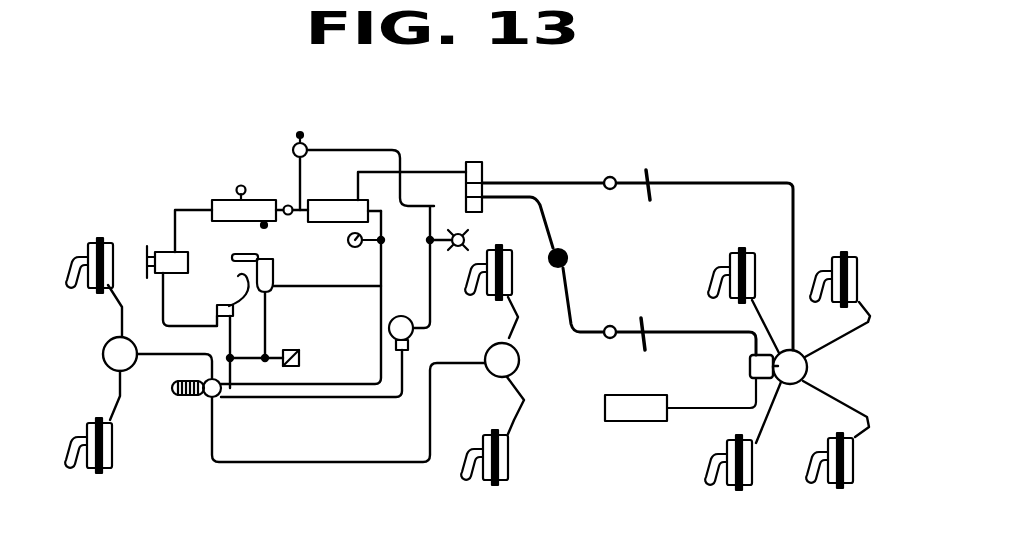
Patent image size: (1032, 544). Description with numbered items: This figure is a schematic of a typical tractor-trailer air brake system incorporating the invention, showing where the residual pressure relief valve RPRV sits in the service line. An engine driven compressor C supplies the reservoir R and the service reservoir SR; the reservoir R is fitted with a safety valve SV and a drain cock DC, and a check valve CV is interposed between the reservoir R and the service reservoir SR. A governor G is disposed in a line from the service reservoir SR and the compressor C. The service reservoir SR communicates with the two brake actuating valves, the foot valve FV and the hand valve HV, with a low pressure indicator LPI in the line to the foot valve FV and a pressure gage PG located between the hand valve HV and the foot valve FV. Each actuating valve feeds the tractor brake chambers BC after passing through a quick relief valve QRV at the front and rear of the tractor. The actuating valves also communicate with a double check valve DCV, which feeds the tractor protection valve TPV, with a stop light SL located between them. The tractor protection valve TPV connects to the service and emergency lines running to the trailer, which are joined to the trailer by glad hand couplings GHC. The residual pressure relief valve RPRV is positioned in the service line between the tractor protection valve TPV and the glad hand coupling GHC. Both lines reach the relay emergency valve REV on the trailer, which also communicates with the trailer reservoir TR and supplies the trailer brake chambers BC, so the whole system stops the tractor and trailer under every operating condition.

The brake chambers BC is at (90, 243).
The quick relief valve QRV is at (103, 348).
The foot valve FV is at (183, 397).
The compressor C is at (172, 274).
The reservoir R is at (244, 211).
The safety valve SV is at (241, 186).
The drain cock DC is at (262, 226).
The check valve CV is at (288, 215).
The service reservoir SR is at (338, 211).
The tractor protection valve TPV is at (482, 163).
The stop light SL is at (465, 236).
The governor G is at (233, 294).
The hand valve HV is at (275, 272).
The low pressure indicator LPI is at (353, 247).
The pressure gage PG is at (290, 352).
The double check valve DCV is at (420, 337).
The glad hand couplings GHC is at (610, 177).
The residual pressure relief valve RPRV is at (567, 268).
The trailer reservoir TR is at (680, 399).
The relay emergency valve REV is at (810, 366).